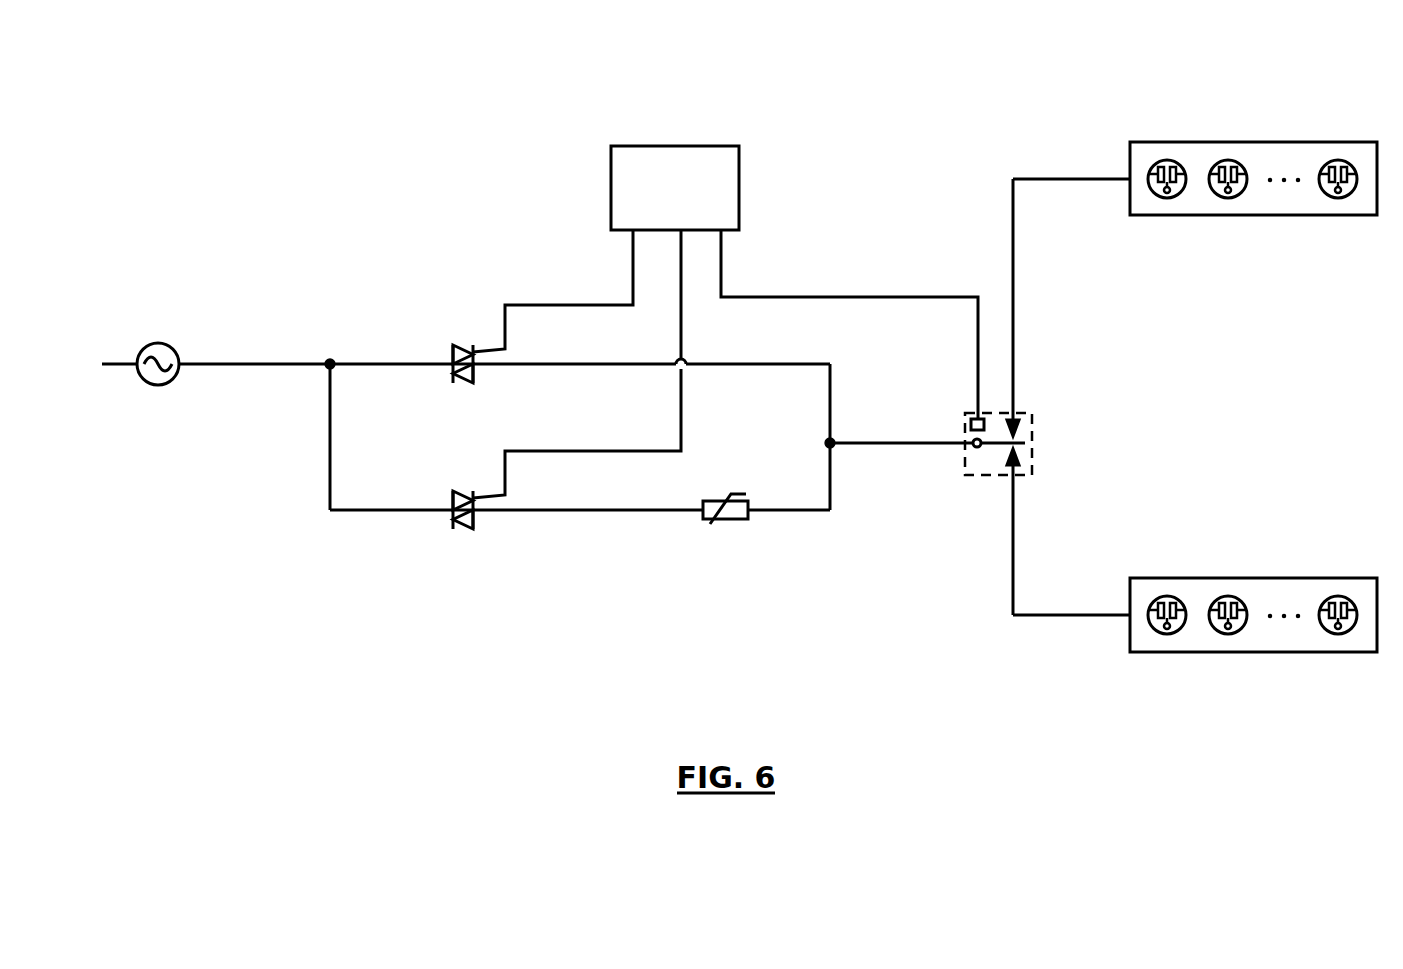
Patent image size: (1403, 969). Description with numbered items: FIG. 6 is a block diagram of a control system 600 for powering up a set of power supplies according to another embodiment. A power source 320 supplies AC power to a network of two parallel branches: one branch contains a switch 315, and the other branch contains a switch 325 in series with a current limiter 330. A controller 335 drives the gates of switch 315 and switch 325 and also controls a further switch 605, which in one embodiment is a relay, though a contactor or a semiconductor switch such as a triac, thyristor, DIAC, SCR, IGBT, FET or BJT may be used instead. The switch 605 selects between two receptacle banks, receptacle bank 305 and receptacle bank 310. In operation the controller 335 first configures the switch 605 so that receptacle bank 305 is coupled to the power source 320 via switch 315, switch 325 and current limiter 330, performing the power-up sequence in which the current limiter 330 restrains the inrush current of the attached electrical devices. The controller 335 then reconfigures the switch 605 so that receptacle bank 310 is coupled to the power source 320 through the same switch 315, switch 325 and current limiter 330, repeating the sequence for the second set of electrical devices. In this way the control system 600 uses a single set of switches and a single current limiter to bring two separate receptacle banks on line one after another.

The control system 600 is at (997, 60).
The power source 320 is at (158, 373).
The switch 315 is at (457, 381).
The switch 325 is at (457, 527).
The current limiter 330 is at (725, 528).
The controller 335 is at (657, 215).
The switch 605 is at (1028, 444).
The receptacle bank 305 is at (1253, 197).
The receptacle bank 310 is at (1253, 635).